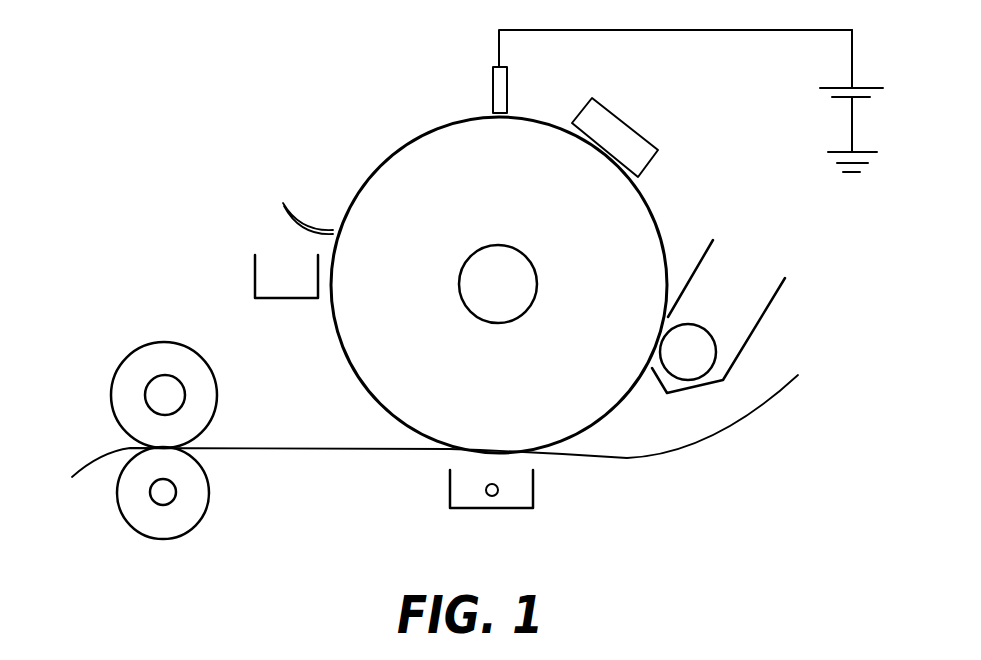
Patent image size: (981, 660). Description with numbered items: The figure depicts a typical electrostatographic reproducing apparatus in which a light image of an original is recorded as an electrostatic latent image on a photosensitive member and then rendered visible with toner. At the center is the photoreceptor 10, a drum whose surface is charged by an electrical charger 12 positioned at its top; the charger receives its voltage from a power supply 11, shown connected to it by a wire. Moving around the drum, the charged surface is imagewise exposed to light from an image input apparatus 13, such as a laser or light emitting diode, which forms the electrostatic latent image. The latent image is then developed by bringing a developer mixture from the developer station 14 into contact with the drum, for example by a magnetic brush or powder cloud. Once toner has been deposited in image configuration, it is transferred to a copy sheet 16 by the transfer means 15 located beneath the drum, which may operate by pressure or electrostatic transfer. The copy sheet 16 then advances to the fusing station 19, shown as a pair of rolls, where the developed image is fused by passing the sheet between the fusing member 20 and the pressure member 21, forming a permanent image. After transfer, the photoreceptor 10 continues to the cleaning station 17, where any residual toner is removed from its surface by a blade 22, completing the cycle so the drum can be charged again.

The photoreceptor 10 is at (655, 220).
The power supply 11 is at (852, 62).
The electrical charger 12 is at (505, 100).
The image input apparatus 13 is at (633, 138).
The developer station 14 is at (728, 292).
The transfer means 15 is at (533, 507).
The copy sheet 16 is at (747, 413).
The cleaning station 17 is at (261, 223).
The fusing station 19 is at (152, 443).
The fusing member 20 is at (210, 378).
The pressure member 21 is at (203, 502).
The blade 22 is at (268, 225).